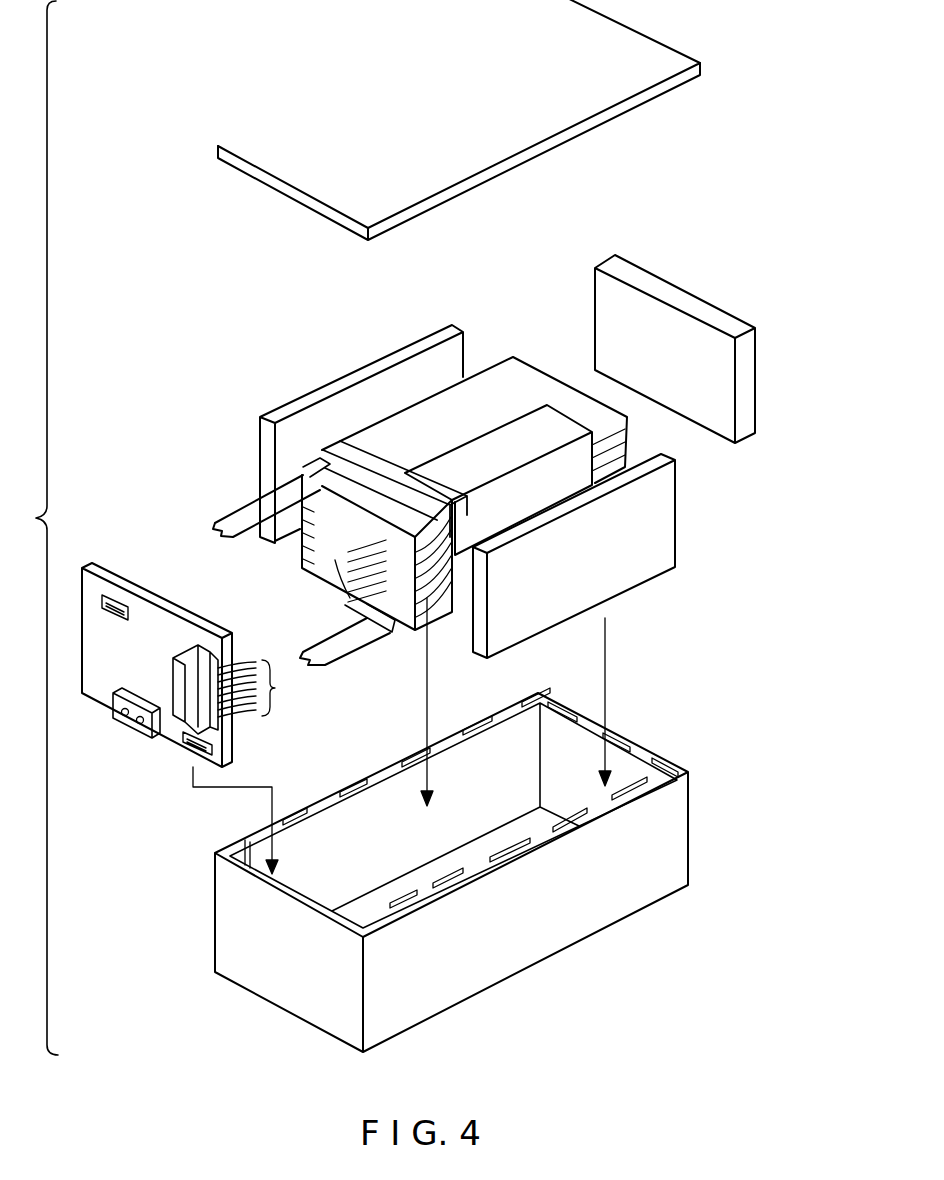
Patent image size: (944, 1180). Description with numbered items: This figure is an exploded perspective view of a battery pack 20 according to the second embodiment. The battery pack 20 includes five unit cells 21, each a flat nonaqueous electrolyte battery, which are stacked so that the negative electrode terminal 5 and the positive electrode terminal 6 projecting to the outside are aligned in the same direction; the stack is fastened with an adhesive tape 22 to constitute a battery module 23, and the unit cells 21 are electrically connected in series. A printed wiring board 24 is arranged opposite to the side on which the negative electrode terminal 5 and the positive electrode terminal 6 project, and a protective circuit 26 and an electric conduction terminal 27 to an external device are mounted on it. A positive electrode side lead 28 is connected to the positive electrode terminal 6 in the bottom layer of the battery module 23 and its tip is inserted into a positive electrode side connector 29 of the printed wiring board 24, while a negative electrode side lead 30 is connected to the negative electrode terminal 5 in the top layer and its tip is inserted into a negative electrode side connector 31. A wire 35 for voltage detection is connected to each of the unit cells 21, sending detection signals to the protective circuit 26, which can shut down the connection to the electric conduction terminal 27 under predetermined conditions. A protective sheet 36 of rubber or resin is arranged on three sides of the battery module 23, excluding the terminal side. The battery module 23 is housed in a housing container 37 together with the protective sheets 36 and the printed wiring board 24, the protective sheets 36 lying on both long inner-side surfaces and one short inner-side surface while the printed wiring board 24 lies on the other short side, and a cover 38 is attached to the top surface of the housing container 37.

The negative electrode terminal 5 is at (303, 475).
The positive electrode terminal 6 is at (387, 527).
The battery pack 20 is at (140, 256).
The unit cell 21 is at (606, 462).
The adhesive tape 22 is at (537, 433).
The battery module 23 is at (407, 412).
The printed wiring board 24 is at (113, 574).
The protective circuit 26 is at (190, 655).
The electric conduction terminal 27 is at (137, 728).
The positive electrode side lead 28 is at (345, 652).
The positive electrode side connector 29 is at (205, 748).
The negative electrode side lead 30 is at (216, 520).
The negative electrode side connector 31 is at (122, 605).
The wire for voltage detection 35 is at (333, 567).
The protective sheet 36 is at (327, 393).
The housing container 37 is at (678, 833).
The cover 38 is at (640, 50).